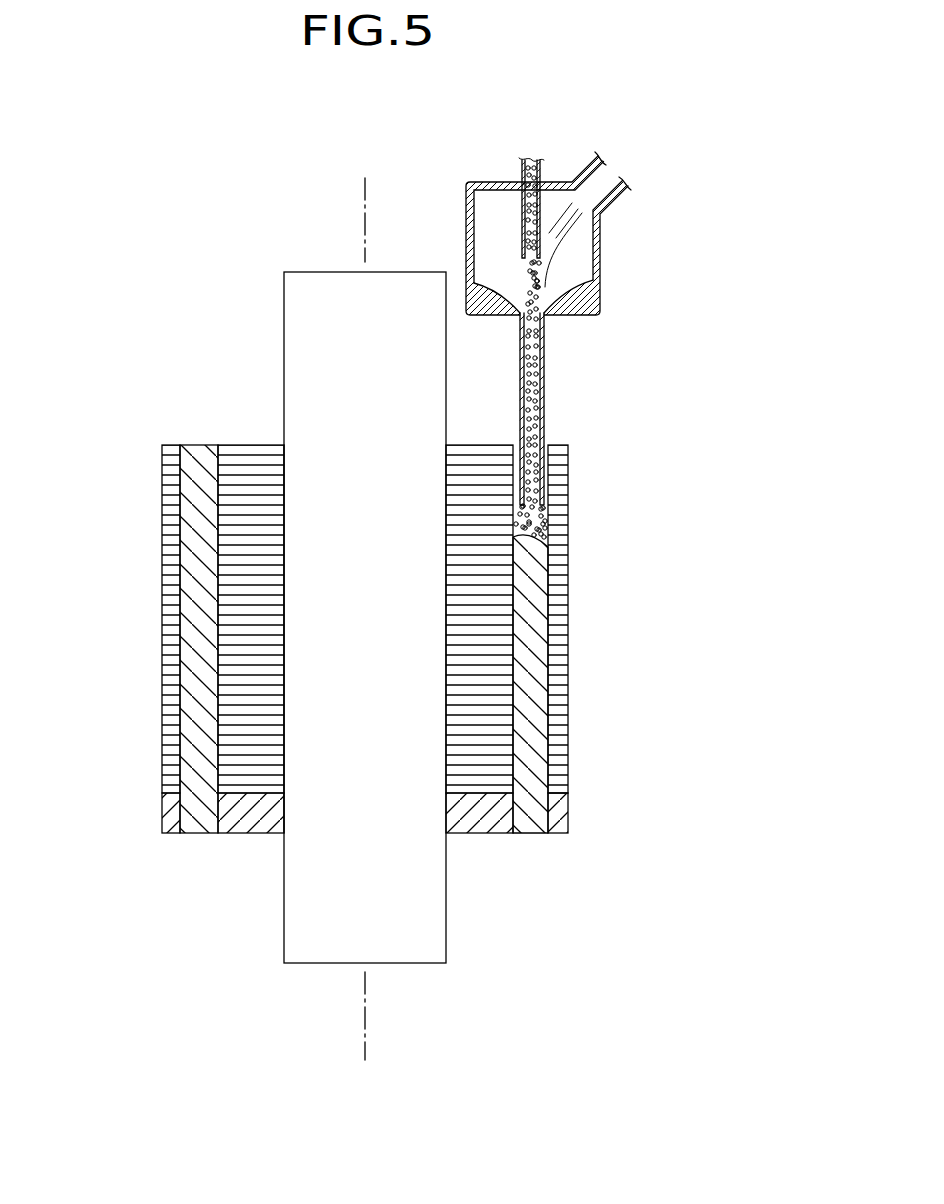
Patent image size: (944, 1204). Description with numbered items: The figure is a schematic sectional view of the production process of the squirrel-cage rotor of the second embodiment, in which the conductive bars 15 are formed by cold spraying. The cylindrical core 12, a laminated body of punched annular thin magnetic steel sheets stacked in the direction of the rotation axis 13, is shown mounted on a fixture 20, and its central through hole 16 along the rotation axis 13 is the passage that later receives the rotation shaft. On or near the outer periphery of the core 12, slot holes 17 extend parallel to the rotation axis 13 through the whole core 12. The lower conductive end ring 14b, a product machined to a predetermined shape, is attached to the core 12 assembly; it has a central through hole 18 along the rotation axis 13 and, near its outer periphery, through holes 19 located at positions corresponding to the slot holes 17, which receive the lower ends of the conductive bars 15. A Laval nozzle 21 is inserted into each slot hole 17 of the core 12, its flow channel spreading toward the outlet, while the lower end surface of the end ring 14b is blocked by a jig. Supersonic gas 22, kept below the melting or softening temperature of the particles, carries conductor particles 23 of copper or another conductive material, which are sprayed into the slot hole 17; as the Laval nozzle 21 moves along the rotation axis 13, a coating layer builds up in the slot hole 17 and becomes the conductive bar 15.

The cylindrical core 12 is at (163, 455).
The rotation axis 13 is at (365, 187).
The lower conductive end ring 14b is at (561, 818).
The conductive bars 15 is at (174, 508).
The through hole 16 is at (270, 720).
The slot holes 17 is at (182, 614).
The through hole 18 is at (288, 818).
The through holes 19 is at (182, 815).
The fixture 20 is at (298, 270).
The Laval nozzle 21 is at (611, 236).
The supersonic gas 22 is at (548, 220).
The conductor particles 23 is at (535, 525).